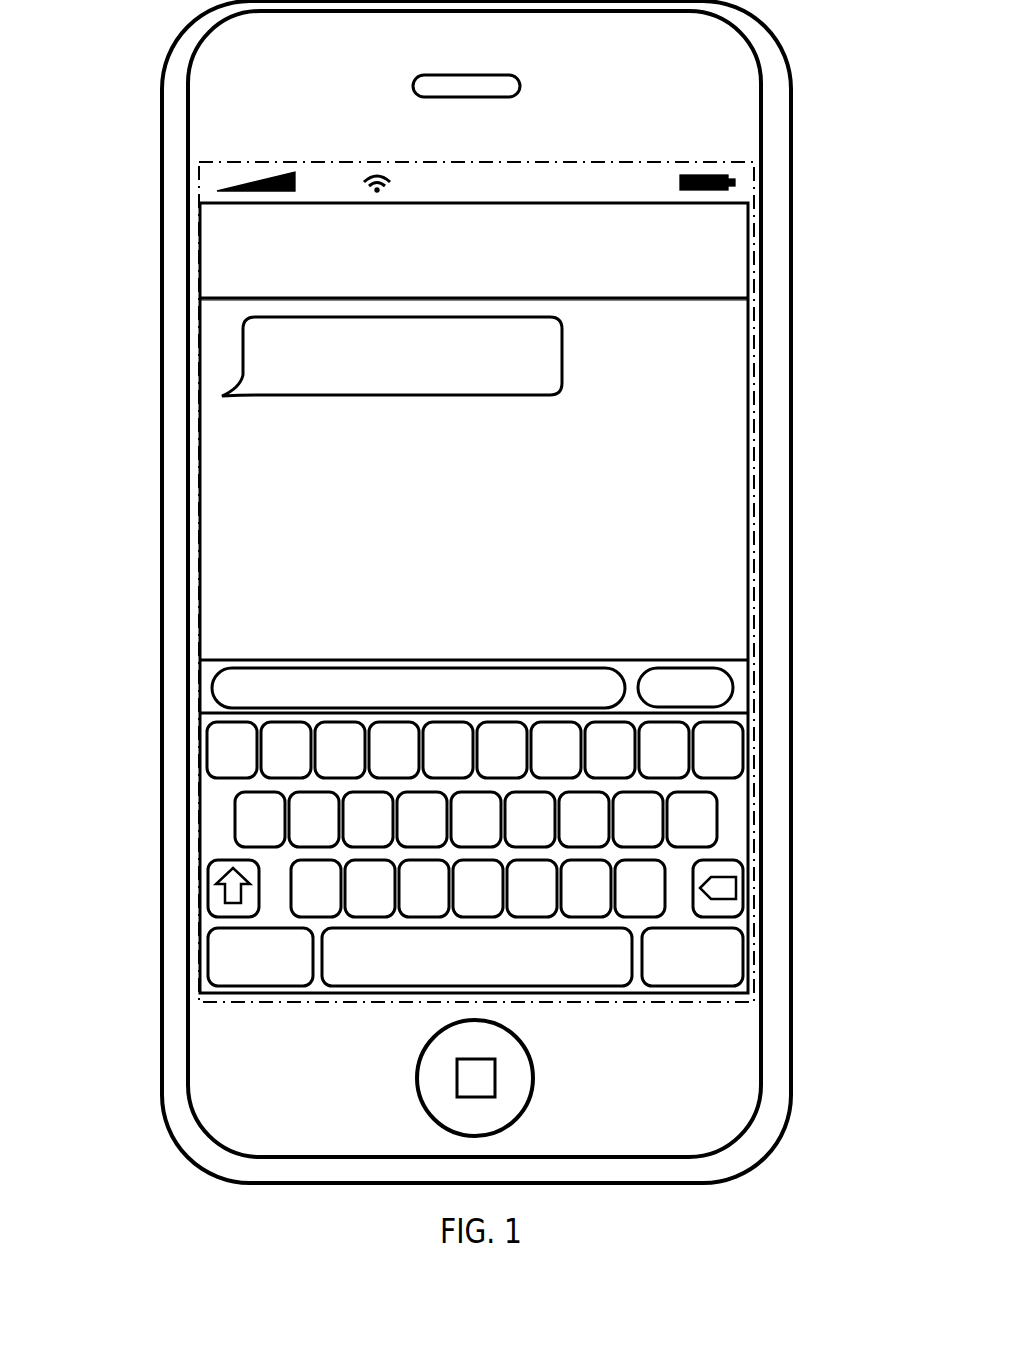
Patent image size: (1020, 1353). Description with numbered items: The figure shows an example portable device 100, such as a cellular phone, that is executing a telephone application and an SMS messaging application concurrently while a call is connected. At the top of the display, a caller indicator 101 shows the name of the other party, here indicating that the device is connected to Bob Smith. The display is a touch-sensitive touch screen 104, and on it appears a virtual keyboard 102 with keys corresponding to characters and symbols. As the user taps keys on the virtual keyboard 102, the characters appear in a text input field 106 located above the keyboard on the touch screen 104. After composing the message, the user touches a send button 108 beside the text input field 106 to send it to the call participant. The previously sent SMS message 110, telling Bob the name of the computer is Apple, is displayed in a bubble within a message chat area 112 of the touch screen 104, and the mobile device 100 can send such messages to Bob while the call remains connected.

The portable device 100 is at (793, 124).
The caller indicator 101 is at (749, 252).
The virtual keyboard 102 is at (752, 805).
The touch screen 104 is at (765, 377).
The text input field 106 is at (212, 688).
The send button 108 is at (732, 686).
The SMS message 110 is at (242, 357).
The message chat area 112 is at (713, 473).